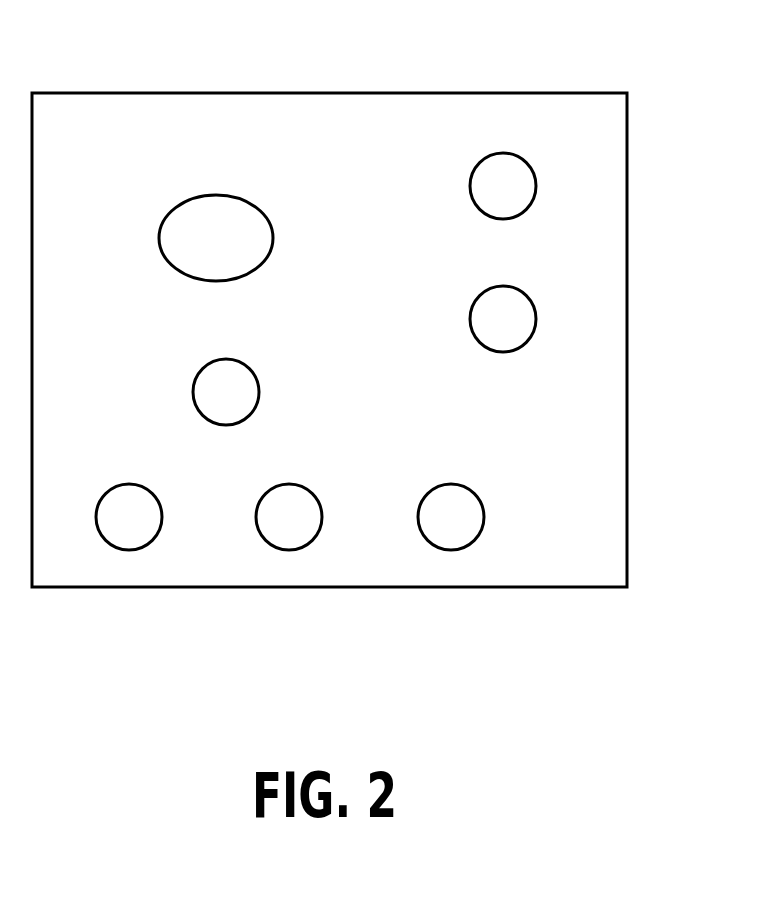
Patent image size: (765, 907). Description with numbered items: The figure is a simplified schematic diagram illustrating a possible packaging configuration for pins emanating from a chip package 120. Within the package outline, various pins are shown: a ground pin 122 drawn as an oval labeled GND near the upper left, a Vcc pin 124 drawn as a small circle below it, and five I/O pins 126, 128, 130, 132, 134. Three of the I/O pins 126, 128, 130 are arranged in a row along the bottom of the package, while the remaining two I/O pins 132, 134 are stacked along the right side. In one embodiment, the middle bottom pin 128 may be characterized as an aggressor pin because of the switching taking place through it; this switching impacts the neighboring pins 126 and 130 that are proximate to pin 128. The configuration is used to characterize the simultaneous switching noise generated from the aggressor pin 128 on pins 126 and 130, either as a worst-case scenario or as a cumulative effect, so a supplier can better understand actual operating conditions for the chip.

The integrated circuit / device package 120 is at (436, 93).
The ground pin 122 is at (225, 195).
The Vcc pin 124 is at (259, 393).
The I/O pin 126 is at (129, 549).
The I/O pin 128 is at (291, 549).
The I/O pin 130 is at (451, 549).
The I/O pin 132 is at (536, 188).
The I/O pin 134 is at (536, 319).